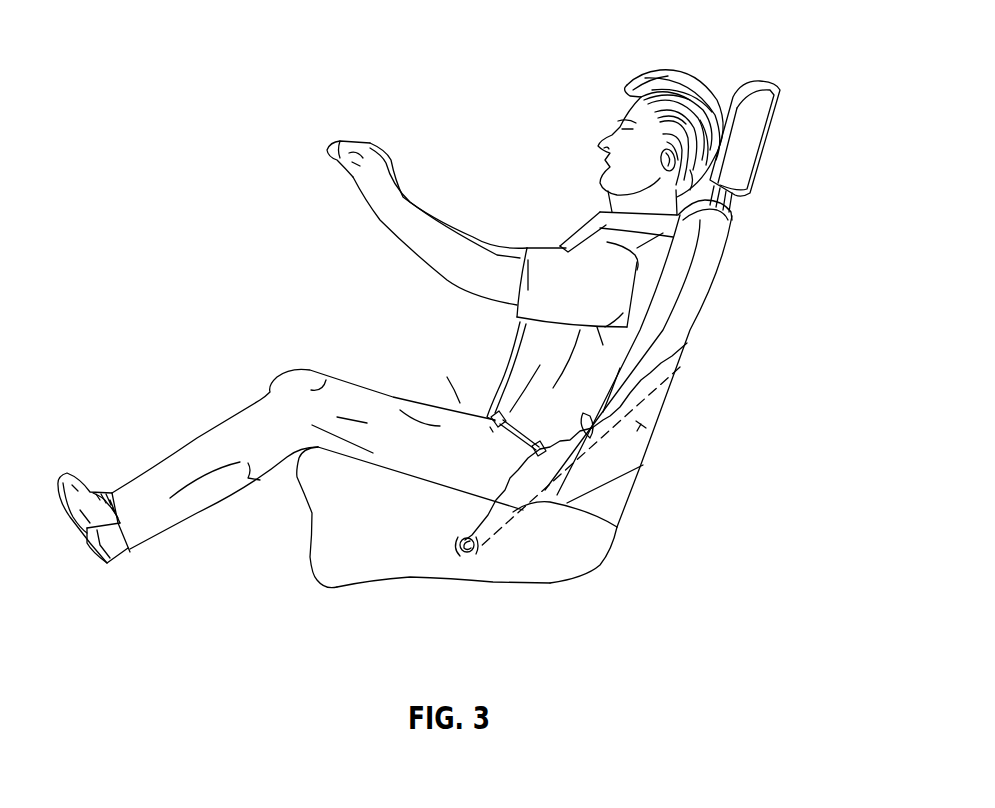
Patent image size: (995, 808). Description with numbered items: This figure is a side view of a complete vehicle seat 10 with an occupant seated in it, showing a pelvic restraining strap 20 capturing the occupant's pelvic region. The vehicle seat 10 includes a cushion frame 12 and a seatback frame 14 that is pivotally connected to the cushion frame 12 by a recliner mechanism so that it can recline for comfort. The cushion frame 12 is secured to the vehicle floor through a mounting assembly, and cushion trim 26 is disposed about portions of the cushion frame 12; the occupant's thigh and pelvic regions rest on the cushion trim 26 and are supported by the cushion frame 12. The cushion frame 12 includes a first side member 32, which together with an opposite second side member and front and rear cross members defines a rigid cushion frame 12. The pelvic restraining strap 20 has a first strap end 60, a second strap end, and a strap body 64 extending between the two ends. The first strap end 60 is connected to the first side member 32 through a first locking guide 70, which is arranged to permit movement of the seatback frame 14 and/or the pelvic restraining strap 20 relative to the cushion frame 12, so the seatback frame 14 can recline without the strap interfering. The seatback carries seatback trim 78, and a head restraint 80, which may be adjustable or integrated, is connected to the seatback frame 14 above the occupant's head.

The vehicle seat 10 is at (757, 45).
The cushion frame 12 is at (444, 541).
The seatback frame 14 is at (700, 298).
The pelvic restraining strap 20 is at (508, 470).
The cushion trim 26 is at (435, 560).
The first side member 32 is at (457, 535).
The first strap end 60 is at (492, 525).
The strap body 64 is at (646, 424).
The first locking guide 70 is at (475, 562).
The seatback trim 78 is at (637, 353).
The head restraint 80 is at (775, 77).